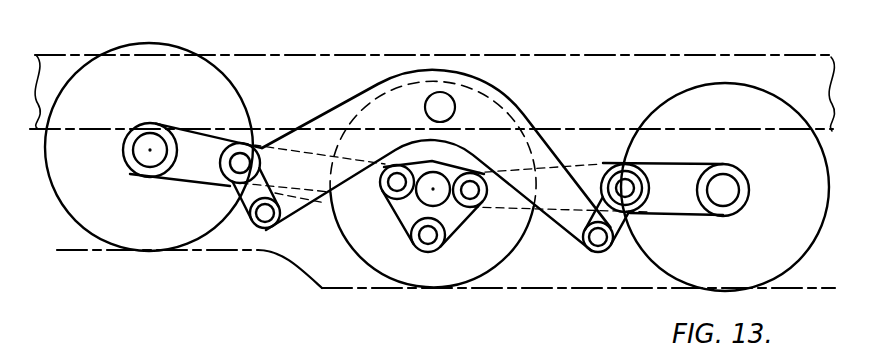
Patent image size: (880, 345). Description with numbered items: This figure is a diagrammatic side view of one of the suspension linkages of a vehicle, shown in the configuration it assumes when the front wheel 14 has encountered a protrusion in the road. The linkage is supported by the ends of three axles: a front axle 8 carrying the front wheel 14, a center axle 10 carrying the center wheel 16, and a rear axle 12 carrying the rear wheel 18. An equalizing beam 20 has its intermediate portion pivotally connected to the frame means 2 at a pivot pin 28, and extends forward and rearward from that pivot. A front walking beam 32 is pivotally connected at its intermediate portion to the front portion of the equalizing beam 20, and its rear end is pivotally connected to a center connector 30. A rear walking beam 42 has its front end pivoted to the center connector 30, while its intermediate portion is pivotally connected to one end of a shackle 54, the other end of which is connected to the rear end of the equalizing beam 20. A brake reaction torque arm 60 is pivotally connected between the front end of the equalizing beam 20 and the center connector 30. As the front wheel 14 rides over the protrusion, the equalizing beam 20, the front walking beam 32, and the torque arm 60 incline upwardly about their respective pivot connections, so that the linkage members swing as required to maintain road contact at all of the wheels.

The frame means 2 is at (217, 50).
The front axle 8 is at (150, 150).
The center axle 10 is at (438, 190).
The rear axle 12 is at (723, 190).
The front wheel 14 is at (98, 217).
The center wheel 16 is at (400, 263).
The rear wheel 18 is at (683, 263).
The equalizing beam 20 is at (513, 84).
The pivot pin 28 is at (434, 100).
The center connector 30 is at (488, 230).
The front walking beam 32 is at (210, 118).
The rear walking beam 42 is at (670, 152).
The shackle 54 is at (622, 230).
The brake reaction torque arm 60 is at (303, 226).